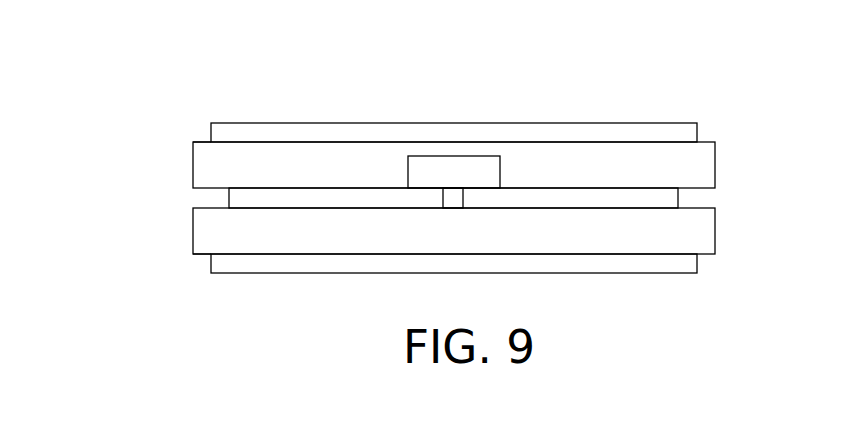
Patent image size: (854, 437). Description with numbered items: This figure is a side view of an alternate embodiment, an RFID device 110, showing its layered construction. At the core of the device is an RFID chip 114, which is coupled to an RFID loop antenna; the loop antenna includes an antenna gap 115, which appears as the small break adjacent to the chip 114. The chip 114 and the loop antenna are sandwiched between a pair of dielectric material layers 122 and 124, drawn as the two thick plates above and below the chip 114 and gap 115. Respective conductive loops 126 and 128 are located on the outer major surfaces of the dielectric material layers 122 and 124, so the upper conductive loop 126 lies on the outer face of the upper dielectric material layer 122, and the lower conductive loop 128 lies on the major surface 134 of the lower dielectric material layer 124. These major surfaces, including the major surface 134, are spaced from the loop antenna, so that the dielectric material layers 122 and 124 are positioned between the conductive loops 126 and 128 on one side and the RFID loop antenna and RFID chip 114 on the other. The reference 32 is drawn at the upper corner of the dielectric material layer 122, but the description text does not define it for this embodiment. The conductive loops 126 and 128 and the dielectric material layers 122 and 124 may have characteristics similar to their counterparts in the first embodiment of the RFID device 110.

The RFID device 110 is at (145, 113).
The corner edge of first substrate 32 is at (202, 141).
The conductive loop 126 is at (248, 122).
The RFID chip 114 is at (453, 160).
The antenna gap 115 is at (453, 197).
The dielectric material layer 122 is at (210, 167).
The dielectric material layer 124 is at (210, 228).
The major surface 134 is at (200, 256).
The conductive loop 128 is at (242, 275).